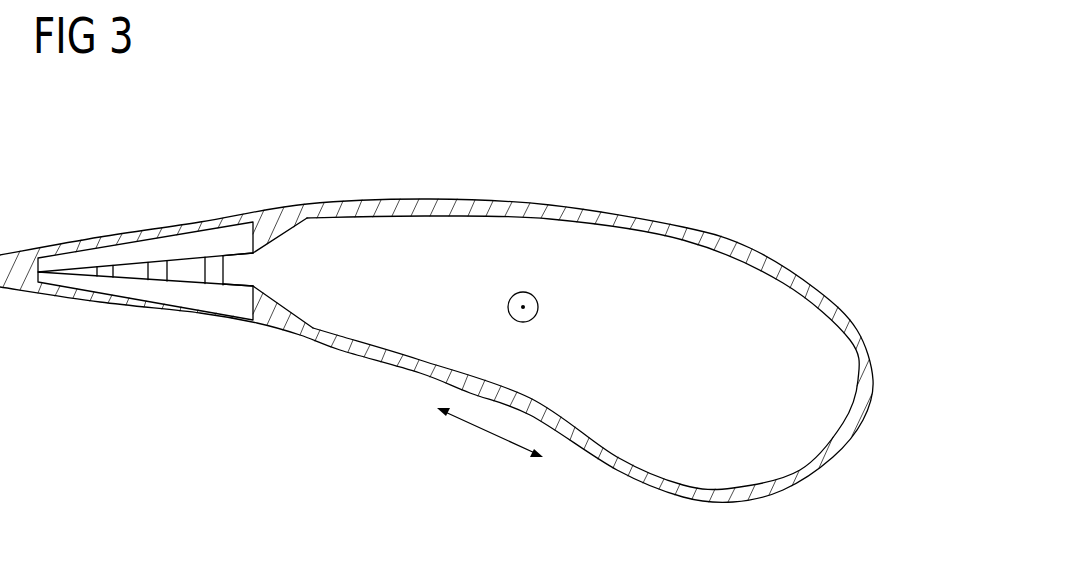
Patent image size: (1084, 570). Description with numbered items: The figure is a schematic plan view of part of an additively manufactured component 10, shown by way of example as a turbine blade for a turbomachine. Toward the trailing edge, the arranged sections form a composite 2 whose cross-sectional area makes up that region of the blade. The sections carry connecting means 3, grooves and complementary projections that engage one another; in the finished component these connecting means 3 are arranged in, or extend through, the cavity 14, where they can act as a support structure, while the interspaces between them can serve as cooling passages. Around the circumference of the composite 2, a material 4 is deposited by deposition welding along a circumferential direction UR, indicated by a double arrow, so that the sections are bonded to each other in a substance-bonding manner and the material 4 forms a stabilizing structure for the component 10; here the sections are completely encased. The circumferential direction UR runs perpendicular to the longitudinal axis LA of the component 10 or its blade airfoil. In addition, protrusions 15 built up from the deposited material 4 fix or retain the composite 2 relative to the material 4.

The component 10 is at (453, 128).
The material 4 is at (675, 228).
The composite 2 is at (75, 260).
The connecting means 3 is at (158, 273).
The cavity 14 is at (240, 273).
The protrusions 15 is at (283, 233).
The longitudinal axis LA is at (523, 307).
The circumferential direction UR is at (480, 428).